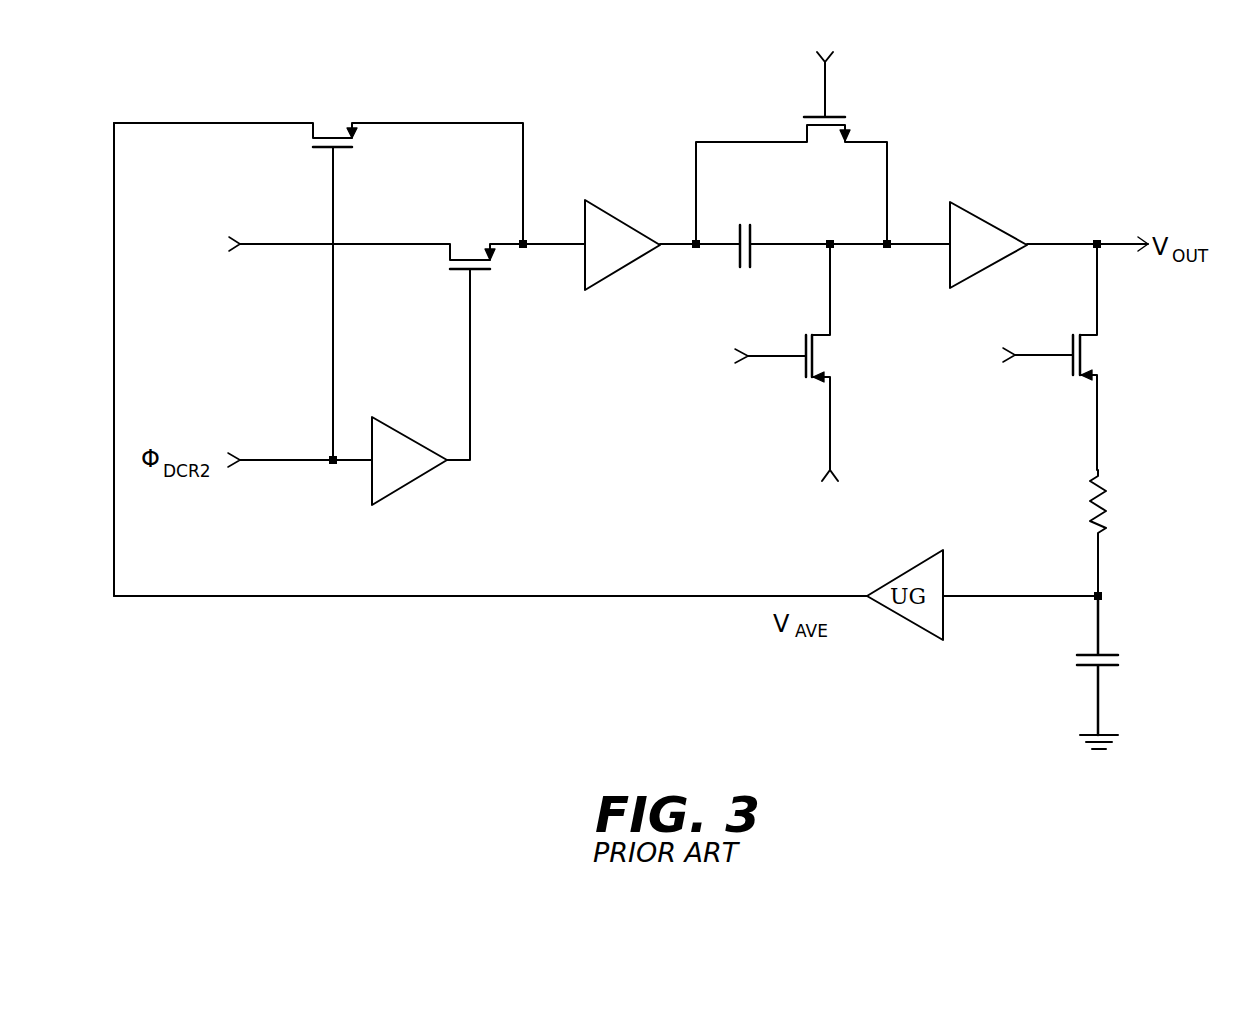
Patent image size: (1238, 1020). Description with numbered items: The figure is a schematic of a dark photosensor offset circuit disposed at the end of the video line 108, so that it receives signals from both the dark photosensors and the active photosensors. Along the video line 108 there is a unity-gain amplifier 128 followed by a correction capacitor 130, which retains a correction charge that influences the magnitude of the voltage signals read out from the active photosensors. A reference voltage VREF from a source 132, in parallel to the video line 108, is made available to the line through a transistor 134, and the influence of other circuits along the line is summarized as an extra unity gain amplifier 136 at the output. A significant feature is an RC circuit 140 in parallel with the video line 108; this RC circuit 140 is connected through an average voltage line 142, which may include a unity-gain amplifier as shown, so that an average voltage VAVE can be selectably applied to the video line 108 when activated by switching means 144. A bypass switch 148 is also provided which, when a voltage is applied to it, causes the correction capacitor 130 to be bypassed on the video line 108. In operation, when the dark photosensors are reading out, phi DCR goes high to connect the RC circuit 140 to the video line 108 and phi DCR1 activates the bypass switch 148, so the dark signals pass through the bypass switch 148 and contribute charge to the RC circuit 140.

The video line 108 is at (275, 247).
The unity-gain amplifier 128 is at (625, 220).
The correction capacitor 130 is at (735, 256).
The reference voltage source 132 is at (832, 455).
The transistor 134 is at (837, 360).
The unity gain amplifier 136 is at (990, 221).
The RC circuit 140 is at (1218, 571).
The average voltage line 142 is at (528, 598).
The switching means 144 is at (412, 439).
The bypass switch 148 is at (834, 105).